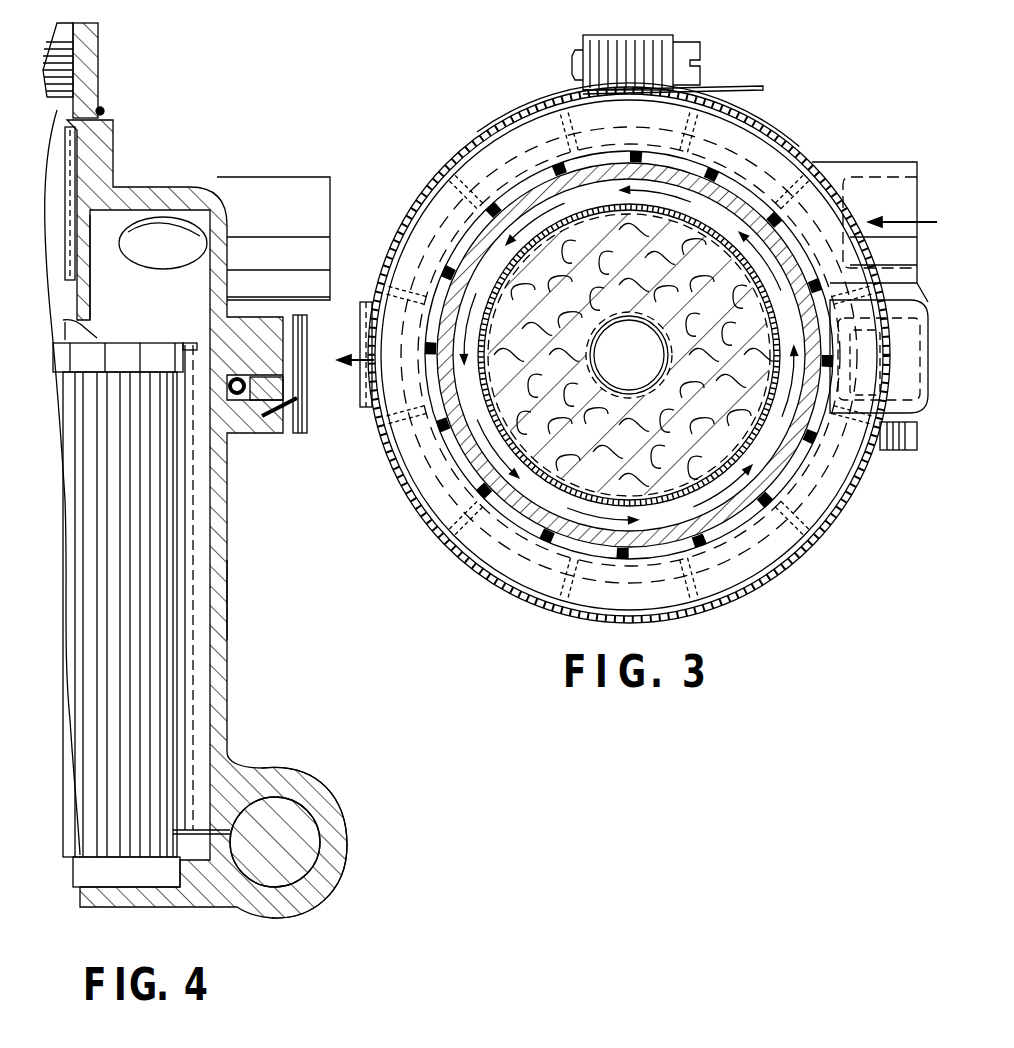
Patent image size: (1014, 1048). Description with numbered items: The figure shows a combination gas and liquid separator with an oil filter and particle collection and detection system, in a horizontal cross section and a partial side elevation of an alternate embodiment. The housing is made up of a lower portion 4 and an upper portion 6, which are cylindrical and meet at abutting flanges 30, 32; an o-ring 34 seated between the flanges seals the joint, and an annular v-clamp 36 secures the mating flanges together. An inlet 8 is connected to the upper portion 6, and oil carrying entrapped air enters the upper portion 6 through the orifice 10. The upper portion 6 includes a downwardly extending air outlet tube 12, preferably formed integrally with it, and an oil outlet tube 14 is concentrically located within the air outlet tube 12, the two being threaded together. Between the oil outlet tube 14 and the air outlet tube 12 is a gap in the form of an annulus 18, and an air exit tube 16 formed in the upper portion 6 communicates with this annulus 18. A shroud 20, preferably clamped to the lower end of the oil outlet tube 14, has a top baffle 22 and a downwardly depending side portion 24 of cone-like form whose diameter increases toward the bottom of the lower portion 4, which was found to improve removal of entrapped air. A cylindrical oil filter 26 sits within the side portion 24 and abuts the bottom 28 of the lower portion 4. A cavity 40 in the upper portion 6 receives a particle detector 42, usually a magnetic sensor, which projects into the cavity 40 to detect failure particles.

In FIG. 4, the lower portion 4 is at (232, 594).
In FIG. 3, the upper portion 6 is at (833, 480).
In FIG. 4, the upper portion 6 is at (128, 180).
In FIG. 3, the inlet 8 is at (840, 160).
In FIG. 4, the inlet 8 is at (263, 190).
In FIG. 3, the orifice 10 is at (718, 208).
In FIG. 4, the orifice 10 is at (150, 250).
In FIG. 3, the air outlet tube 12 is at (670, 331).
In FIG. 4, the air outlet tube 12 is at (80, 270).
In FIG. 3, the oil outlet tube 14 is at (642, 327).
In FIG. 4, the oil outlet tube 14 is at (95, 78).
In FIG. 3, the air exit tube 16 is at (390, 380).
In FIG. 3, the annulus 18 is at (597, 387).
In FIG. 4, the annulus 18 is at (77, 227).
In FIG. 3, the shroud 20 is at (775, 440).
In FIG. 4, the shroud 20 is at (200, 500).
In FIG. 3, the baffle 22 is at (777, 296).
In FIG. 4, the baffle 22 is at (190, 353).
In FIG. 4, the side portion 24 is at (196, 547).
In FIG. 3, the oil filter 26 is at (707, 439).
In FIG. 4, the oil filter 26 is at (160, 655).
In FIG. 4, the bottom 28 is at (120, 875).
In FIG. 3, the flange 30 is at (803, 527).
In FIG. 4, the flange 30 is at (283, 362).
In FIG. 4, the flange 32 is at (268, 388).
In FIG. 3, the o-ring 34 is at (787, 480).
In FIG. 4, the o-ring 34 is at (232, 394).
In FIG. 3, the annular v-clamp 36 is at (433, 523).
In FIG. 4, the annular v-clamp 36 is at (262, 418).
In FIG. 3, the cavity 40 is at (905, 426).
In FIG. 4, the cavity 40 is at (290, 860).
In FIG. 3, the particle detector 42 is at (903, 437).
In FIG. 4, the particle detector 42 is at (283, 828).